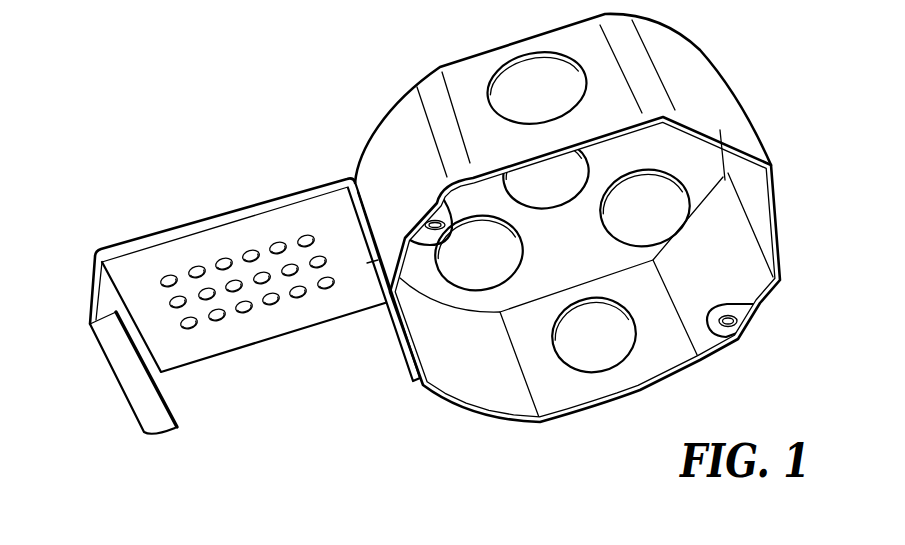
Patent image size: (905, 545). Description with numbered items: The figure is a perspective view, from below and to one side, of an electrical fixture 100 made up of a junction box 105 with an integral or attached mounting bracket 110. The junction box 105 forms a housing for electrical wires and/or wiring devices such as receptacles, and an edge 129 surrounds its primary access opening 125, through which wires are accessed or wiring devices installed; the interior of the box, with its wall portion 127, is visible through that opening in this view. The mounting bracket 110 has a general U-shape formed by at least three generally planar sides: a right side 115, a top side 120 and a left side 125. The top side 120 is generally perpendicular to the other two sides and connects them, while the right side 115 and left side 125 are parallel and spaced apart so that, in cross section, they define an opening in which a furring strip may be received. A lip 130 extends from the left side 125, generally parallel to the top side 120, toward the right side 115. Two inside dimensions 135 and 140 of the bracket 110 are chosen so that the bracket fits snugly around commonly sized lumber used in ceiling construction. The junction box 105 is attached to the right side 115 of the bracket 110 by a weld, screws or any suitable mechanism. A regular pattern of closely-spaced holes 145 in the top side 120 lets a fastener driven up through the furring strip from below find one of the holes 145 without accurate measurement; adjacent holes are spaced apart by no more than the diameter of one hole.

The electrical fixture 100 is at (262, 62).
The junction box 105 is at (599, 242).
The mounting bracket 110 is at (442, 432).
The right side 115 is at (400, 358).
The top side 120 is at (243, 327).
The left side 125 is at (90, 277).
The box bottom wall 127 is at (555, 378).
The edge 129 is at (778, 211).
The lip 130 is at (159, 424).
The inside dimension 135 is at (356, 178).
The inside dimension 140 is at (88, 322).
The holes 145 is at (262, 284).